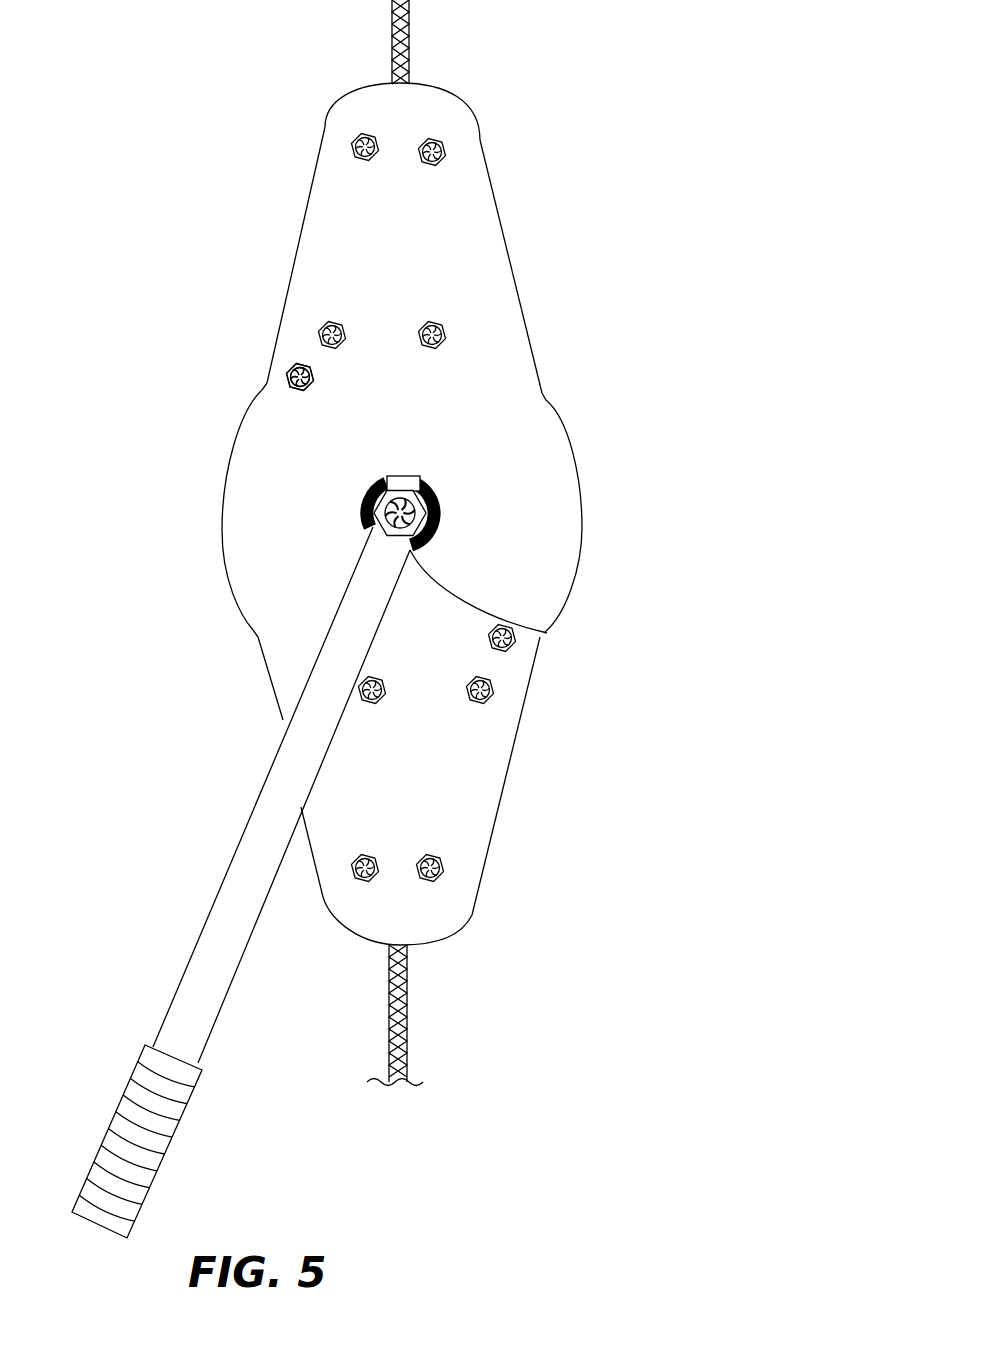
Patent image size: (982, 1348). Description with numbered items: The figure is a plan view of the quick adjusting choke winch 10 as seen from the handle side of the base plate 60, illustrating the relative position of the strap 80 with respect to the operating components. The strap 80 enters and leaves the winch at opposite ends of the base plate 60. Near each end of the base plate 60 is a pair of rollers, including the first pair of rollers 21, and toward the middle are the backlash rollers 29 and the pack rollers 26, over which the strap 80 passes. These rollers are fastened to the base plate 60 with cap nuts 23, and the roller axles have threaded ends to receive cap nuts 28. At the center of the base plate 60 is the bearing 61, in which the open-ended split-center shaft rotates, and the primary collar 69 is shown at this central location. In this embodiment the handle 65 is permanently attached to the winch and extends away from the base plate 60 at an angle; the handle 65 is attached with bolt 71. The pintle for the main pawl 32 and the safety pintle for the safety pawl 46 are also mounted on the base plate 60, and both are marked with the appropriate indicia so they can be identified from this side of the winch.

The quick adjusting choke winch 10 is at (612, 410).
The first pair of rollers 21 is at (352, 153).
The cap nuts 23 is at (438, 165).
The pack rollers 26 is at (449, 335).
The cap nuts 28 is at (497, 698).
The backlash rollers 29 is at (316, 333).
The pintle for the main pawl 32 is at (518, 643).
The safety pintle for the safety pawl 46 is at (293, 378).
The base plate 60 is at (291, 526).
The bearing 61 is at (433, 478).
The handle 65 is at (228, 947).
The primary collar 69 is at (440, 527).
The bolt 71 is at (545, 633).
The strap 80 is at (392, 10).